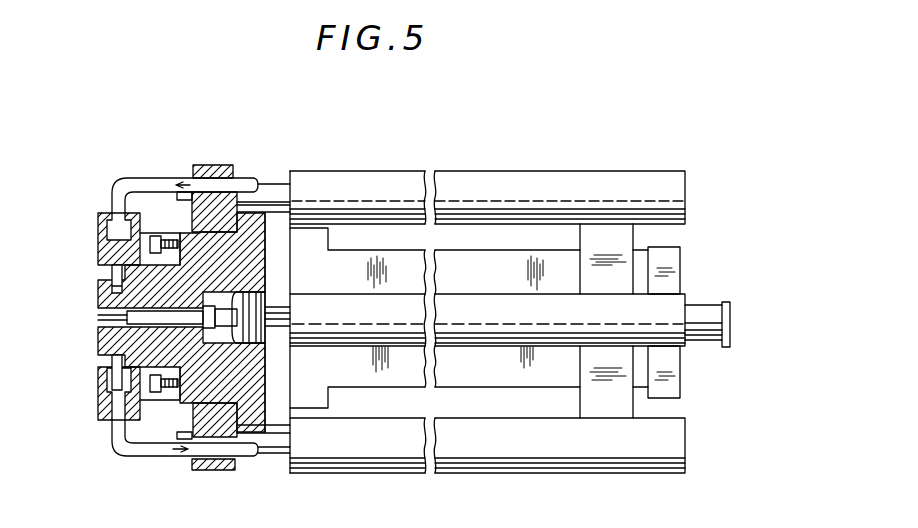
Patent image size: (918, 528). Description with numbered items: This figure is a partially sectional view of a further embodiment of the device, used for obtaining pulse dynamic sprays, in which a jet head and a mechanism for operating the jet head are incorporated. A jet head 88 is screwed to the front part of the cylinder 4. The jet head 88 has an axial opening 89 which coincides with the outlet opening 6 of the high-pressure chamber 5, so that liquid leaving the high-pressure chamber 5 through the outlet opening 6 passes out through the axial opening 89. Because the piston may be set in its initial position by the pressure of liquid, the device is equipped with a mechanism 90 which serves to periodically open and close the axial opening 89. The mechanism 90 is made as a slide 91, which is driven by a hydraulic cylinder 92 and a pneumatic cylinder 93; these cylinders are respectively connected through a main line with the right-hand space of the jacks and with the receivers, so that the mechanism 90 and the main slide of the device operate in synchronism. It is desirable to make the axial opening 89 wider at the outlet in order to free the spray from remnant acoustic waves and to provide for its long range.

The cylinder 4 is at (248, 223).
The high-pressure chamber 5 is at (240, 330).
The outlet opening 6 is at (213, 303).
The jet head 88 is at (173, 282).
The axial opening 89 is at (108, 288).
The mechanism 90 is at (98, 302).
The slide 91 is at (98, 347).
The hydraulic cylinder 92 is at (106, 430).
The pneumatic cylinder 93 is at (111, 209).